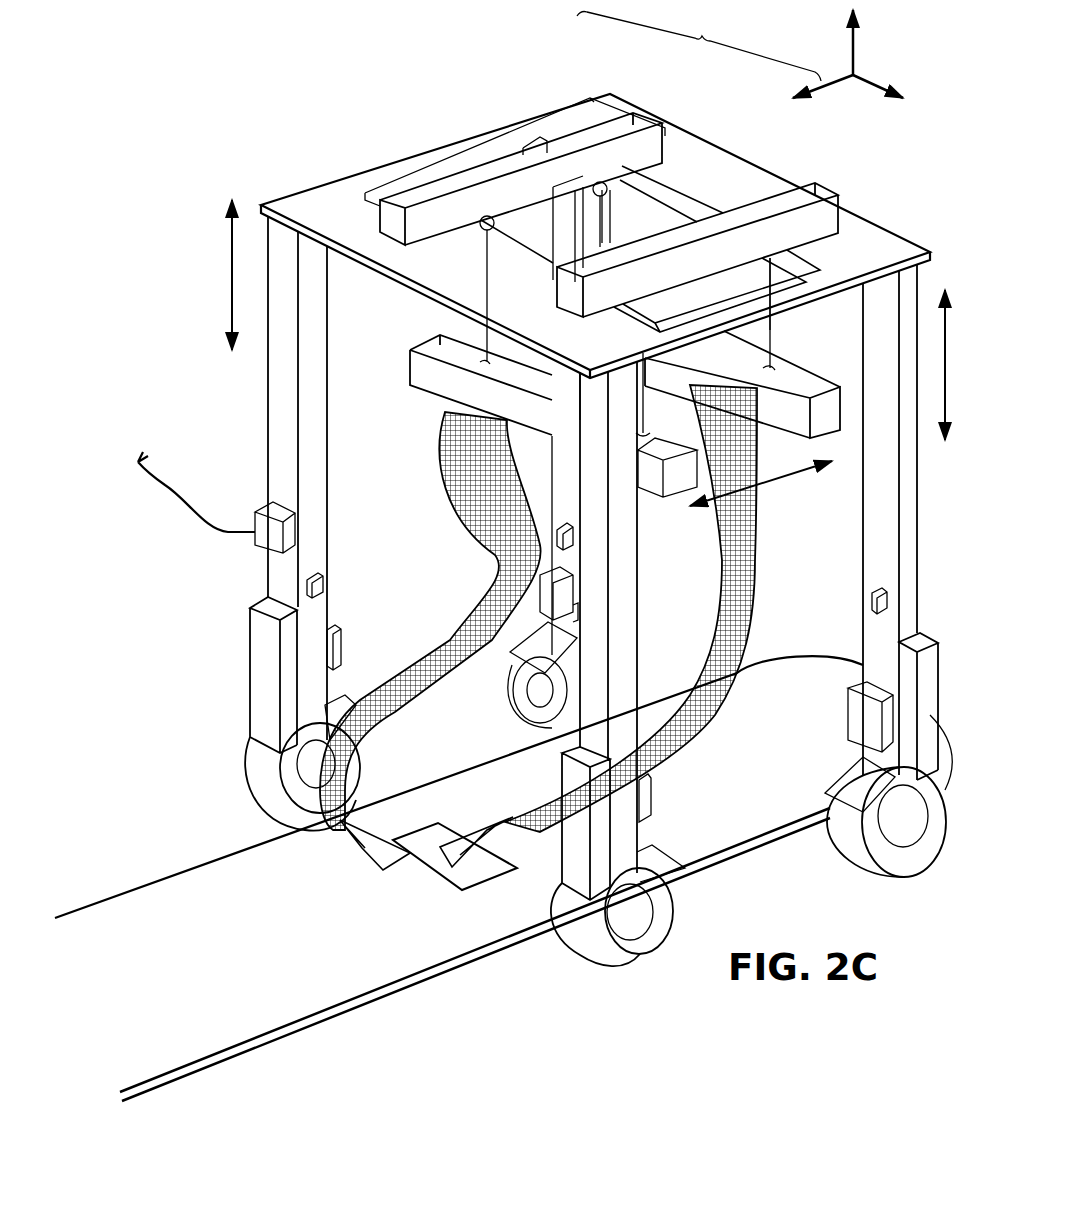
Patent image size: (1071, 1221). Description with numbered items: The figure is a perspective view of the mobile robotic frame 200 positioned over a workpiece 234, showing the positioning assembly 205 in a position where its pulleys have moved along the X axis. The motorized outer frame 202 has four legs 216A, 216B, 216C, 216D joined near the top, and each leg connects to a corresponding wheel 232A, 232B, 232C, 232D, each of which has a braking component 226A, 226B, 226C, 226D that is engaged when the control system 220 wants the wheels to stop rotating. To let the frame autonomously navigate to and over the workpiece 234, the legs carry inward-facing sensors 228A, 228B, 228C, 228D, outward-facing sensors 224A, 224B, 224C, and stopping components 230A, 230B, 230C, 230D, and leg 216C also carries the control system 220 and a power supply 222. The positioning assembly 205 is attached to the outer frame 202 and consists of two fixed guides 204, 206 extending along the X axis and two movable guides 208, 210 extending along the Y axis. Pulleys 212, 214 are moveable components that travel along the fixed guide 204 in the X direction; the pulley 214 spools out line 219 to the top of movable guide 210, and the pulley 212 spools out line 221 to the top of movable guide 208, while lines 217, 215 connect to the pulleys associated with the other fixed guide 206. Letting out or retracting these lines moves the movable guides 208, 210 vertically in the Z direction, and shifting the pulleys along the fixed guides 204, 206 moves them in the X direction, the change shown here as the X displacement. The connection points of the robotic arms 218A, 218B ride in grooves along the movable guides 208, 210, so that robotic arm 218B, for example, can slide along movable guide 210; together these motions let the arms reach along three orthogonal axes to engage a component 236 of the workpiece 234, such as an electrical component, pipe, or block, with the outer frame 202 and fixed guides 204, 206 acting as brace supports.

The mobile robotic frame 200 is at (222, 82).
The motorized outer frame 202 is at (318, 186).
The fixed guide 204 is at (643, 123).
The positioning assembly 205 is at (699, 45).
The fixed guide 206 is at (822, 183).
The movable guide 208 is at (792, 368).
The movable guide 210 is at (410, 360).
The pulley 212 is at (660, 190).
The pulley 214 is at (460, 163).
The line 215 is at (780, 327).
The leg 216A is at (917, 553).
The leg 216B is at (640, 648).
The leg 216C is at (328, 536).
The leg 216D is at (503, 218).
The line 217 is at (647, 383).
The robotic arm 218A is at (753, 587).
The robotic arm 218B is at (492, 583).
The line 219 is at (478, 365).
The control system 220 is at (265, 505).
The line 221 is at (612, 214).
The power supply 222 is at (227, 537).
The outward-facing sensor 224A is at (937, 678).
The outward-facing sensor 224B is at (568, 857).
The outward-facing sensor 224C is at (252, 680).
The braking component 226A is at (845, 773).
The braking component 226B is at (660, 858).
The braking component 226C is at (350, 680).
The braking component 226D is at (520, 683).
The inward-facing sensor 228A is at (870, 607).
The inward-facing sensor 228B is at (573, 615).
The inward-facing sensor 228C is at (325, 585).
The inward-facing sensor 228D is at (573, 537).
The stopping component 230A is at (862, 715).
The stopping component 230B is at (652, 800).
The stopping component 230C is at (340, 640).
The stopping component 230D is at (555, 597).
The wheel 232A is at (897, 870).
The wheel 232B is at (580, 947).
The wheel 232C is at (252, 790).
The wheel 232D is at (533, 717).
The workpiece 234 is at (768, 660).
The component 236 is at (457, 897).